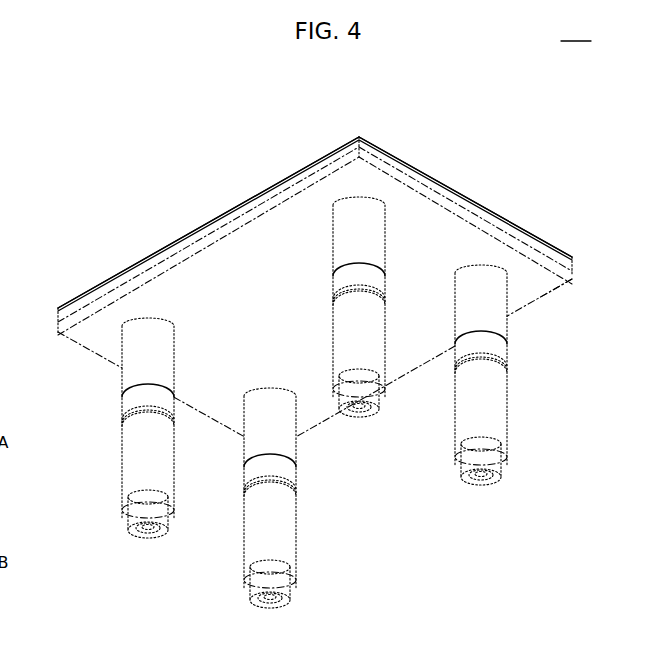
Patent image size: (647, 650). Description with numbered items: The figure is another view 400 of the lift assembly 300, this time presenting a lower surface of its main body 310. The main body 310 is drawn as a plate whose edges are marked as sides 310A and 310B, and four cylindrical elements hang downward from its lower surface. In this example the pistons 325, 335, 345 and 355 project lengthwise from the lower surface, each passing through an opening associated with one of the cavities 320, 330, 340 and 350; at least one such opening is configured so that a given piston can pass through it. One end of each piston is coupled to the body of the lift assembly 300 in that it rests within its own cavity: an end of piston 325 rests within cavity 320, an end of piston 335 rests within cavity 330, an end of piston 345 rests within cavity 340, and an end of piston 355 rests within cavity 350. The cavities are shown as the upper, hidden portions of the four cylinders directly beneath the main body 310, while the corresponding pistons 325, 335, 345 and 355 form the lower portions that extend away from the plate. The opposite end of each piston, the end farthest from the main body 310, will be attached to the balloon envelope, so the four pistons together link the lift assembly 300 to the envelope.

The view 400 is at (576, 33).
The lift assembly 300 is at (417, 139).
The main body 310 is at (95, 287).
The plate first side 310A is at (548, 240).
The plate second side 310B is at (553, 290).
The cavity 320 is at (122, 366).
The piston 325 is at (132, 447).
The cavity 330 is at (247, 418).
The piston 335 is at (262, 538).
The cavity 340 is at (333, 200).
The piston 345 is at (367, 330).
The cavity 350 is at (512, 300).
The piston 355 is at (497, 420).